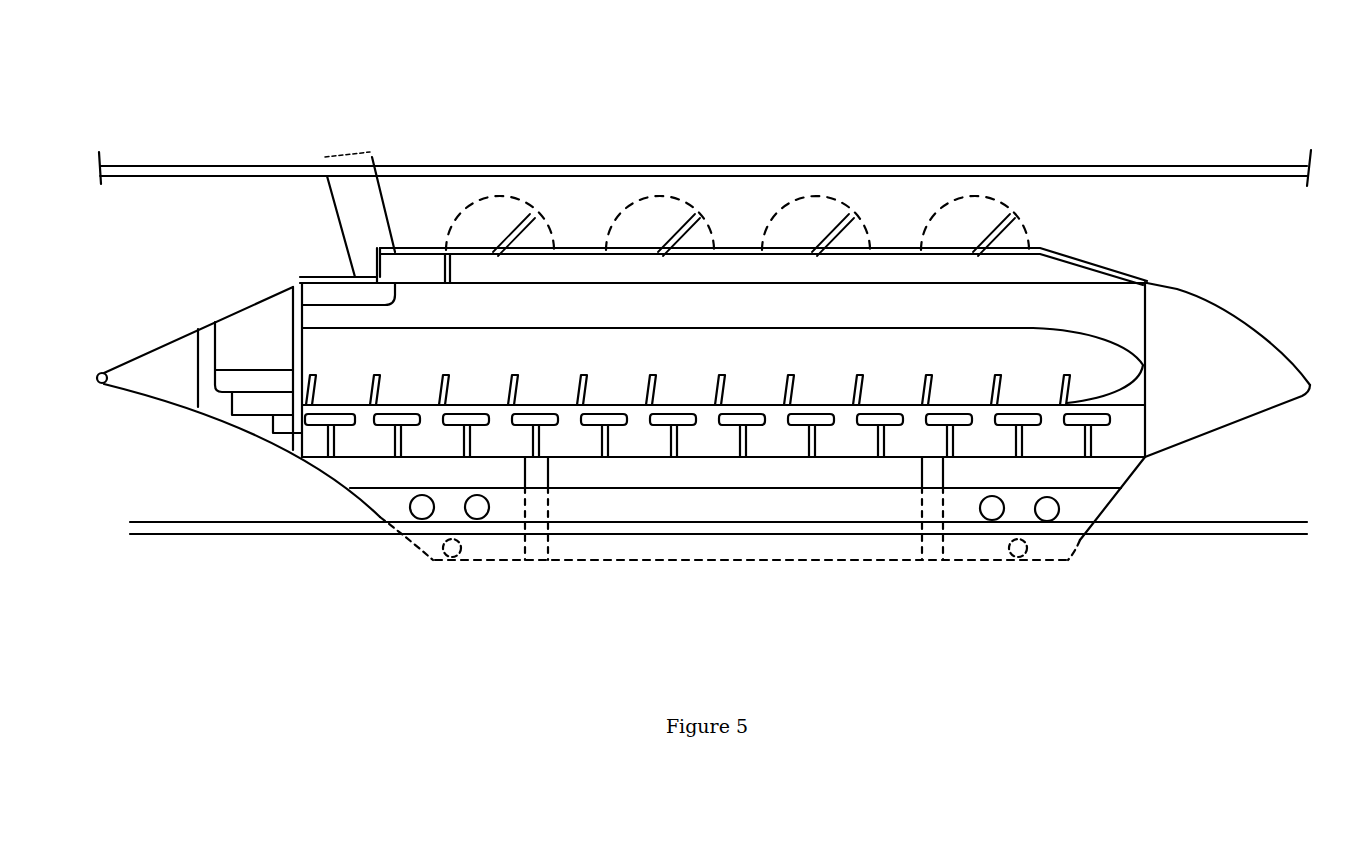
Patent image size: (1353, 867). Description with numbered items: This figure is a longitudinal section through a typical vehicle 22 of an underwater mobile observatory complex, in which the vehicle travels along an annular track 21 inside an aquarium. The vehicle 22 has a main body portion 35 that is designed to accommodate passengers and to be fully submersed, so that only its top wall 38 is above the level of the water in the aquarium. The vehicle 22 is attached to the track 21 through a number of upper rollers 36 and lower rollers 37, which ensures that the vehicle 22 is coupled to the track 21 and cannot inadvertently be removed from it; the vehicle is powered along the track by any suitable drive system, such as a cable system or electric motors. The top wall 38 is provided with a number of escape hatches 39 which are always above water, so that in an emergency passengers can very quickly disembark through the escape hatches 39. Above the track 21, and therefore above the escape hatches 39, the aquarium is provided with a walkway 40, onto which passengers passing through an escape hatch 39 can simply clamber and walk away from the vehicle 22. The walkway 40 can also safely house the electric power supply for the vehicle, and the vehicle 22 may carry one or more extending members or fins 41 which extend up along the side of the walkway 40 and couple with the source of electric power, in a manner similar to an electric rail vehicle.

The annular track 21 is at (277, 520).
The vehicle 22 is at (208, 276).
The main body portion 35 is at (395, 363).
The upper rollers 36 is at (486, 540).
The lower rollers 37 is at (457, 542).
The top wall 38 is at (420, 243).
The escape hatches 39 is at (497, 205).
The walkway 40 is at (233, 160).
The extending members or fins 41 is at (338, 225).